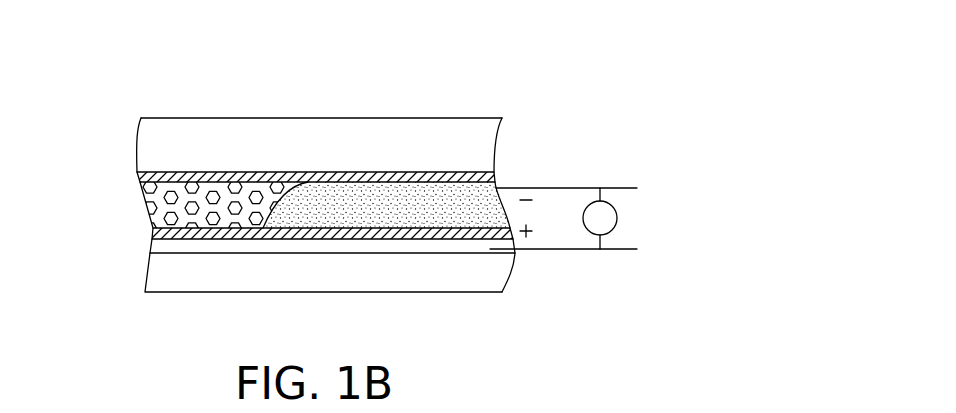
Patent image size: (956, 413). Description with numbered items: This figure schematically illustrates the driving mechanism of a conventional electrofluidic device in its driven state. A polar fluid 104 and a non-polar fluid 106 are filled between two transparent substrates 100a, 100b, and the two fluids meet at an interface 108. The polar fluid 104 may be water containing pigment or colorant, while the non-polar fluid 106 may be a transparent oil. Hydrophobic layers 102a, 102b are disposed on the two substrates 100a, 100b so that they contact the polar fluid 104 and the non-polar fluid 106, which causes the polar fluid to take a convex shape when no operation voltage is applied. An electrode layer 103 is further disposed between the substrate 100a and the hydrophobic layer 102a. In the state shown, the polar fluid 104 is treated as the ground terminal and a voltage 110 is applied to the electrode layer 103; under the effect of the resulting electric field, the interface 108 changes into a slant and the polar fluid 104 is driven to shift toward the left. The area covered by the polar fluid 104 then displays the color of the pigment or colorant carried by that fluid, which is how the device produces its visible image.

The transparent substrate 100a is at (150, 272).
The transparent substrate 100b is at (141, 128).
The hydrophobic layer 102a is at (155, 234).
The hydrophobic layer 102b is at (137, 177).
The electrode layer 103 is at (157, 247).
The polar fluid 104 is at (407, 198).
The non-polar fluid 106 is at (242, 187).
The interface 108 is at (296, 182).
The voltage 110 is at (617, 218).